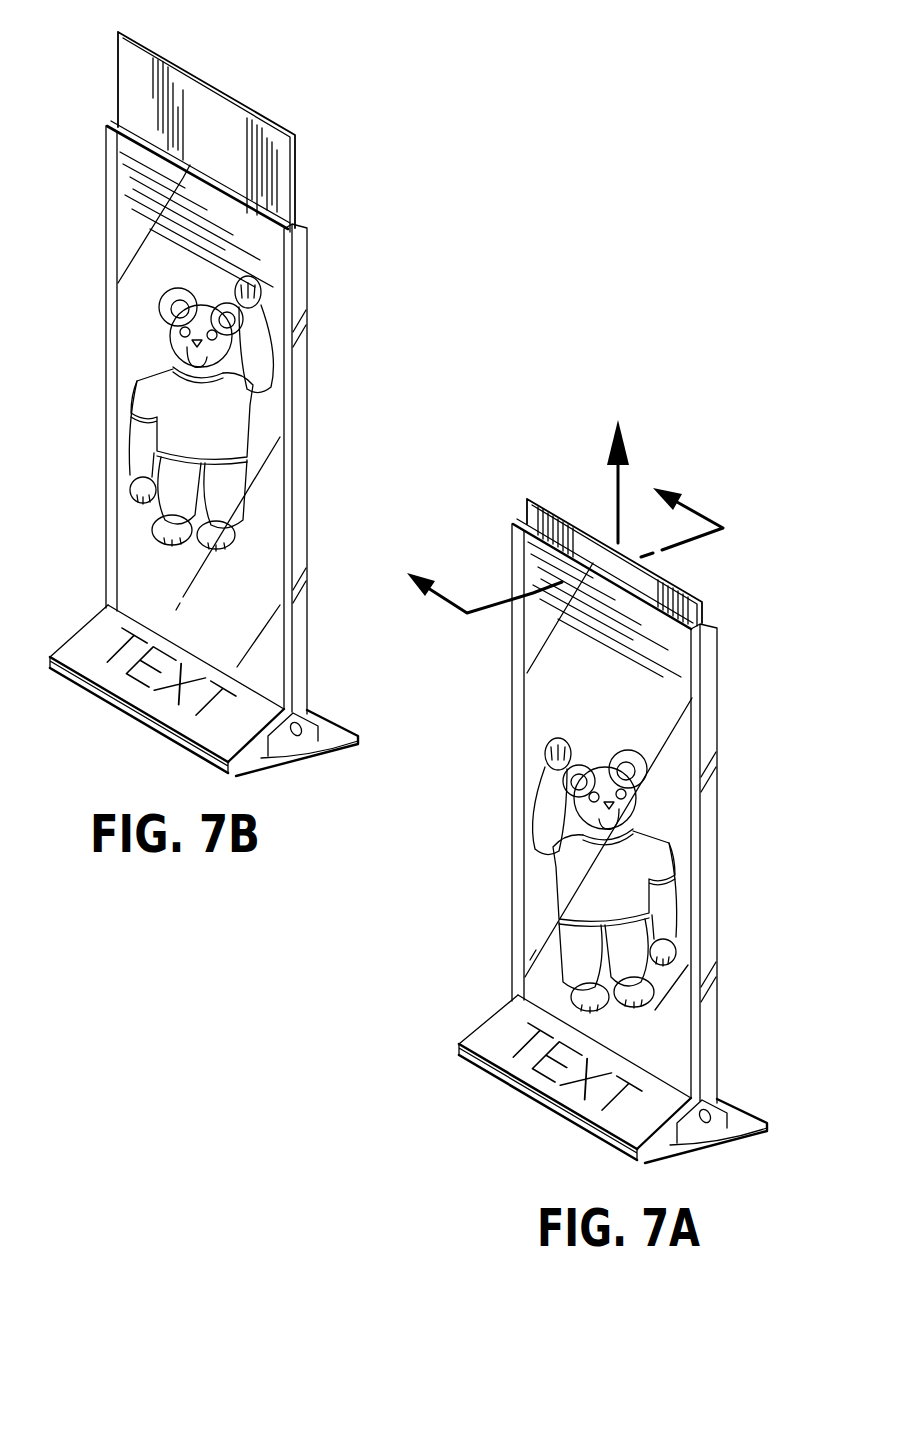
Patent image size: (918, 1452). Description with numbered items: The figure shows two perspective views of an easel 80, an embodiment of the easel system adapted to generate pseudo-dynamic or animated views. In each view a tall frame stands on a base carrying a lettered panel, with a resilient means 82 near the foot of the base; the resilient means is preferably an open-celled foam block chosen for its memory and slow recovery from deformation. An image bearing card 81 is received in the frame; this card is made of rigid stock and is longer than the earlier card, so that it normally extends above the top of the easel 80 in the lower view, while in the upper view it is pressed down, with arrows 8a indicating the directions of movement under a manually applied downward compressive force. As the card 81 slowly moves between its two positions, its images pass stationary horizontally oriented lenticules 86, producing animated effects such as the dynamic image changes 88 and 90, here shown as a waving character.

In FIG. 7B, the easel 80 is at (352, 333).
In FIG. 7A, the easel 80 is at (760, 668).
In FIG. 7B, the image bearing card 81 is at (280, 124).
In FIG. 7A, the image bearing card 81 is at (681, 584).
In FIG. 7B, the resilient means 82 is at (307, 735).
In FIG. 7A, the resilient means 82 is at (721, 1124).
In FIG. 7B, the lenticules 86 is at (200, 215).
In FIG. 7A, the lenticules 86 is at (590, 602).
In FIG. 7A, the dynamic image change 88 is at (572, 903).
In FIG. 7B, the dynamic image change 90 is at (165, 397).
In FIG. 7A, the insertion direction arrows 8a is at (565, 516).